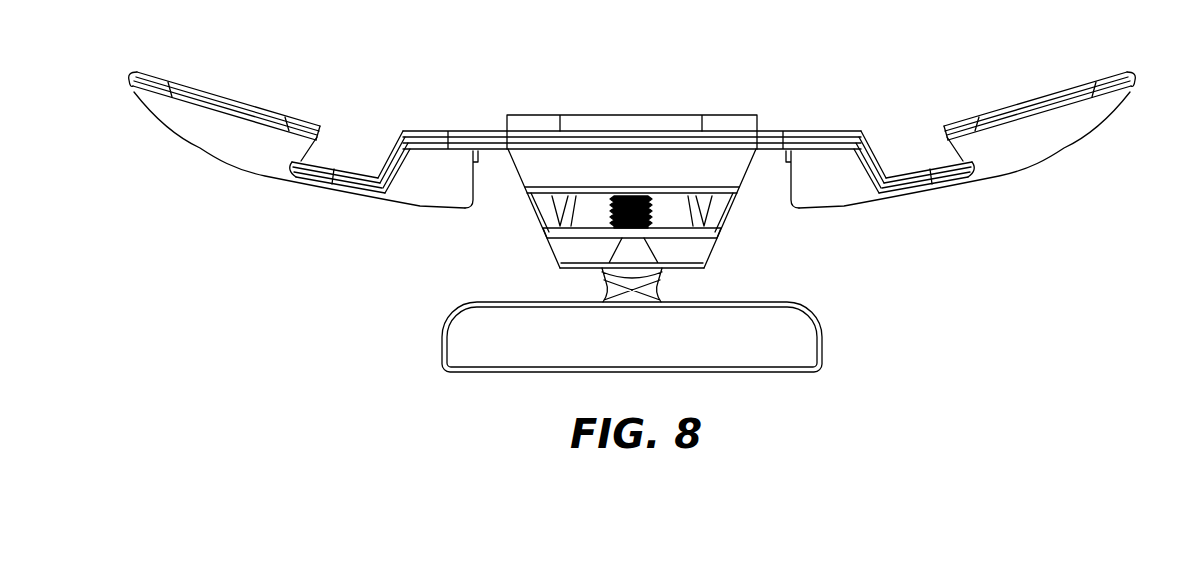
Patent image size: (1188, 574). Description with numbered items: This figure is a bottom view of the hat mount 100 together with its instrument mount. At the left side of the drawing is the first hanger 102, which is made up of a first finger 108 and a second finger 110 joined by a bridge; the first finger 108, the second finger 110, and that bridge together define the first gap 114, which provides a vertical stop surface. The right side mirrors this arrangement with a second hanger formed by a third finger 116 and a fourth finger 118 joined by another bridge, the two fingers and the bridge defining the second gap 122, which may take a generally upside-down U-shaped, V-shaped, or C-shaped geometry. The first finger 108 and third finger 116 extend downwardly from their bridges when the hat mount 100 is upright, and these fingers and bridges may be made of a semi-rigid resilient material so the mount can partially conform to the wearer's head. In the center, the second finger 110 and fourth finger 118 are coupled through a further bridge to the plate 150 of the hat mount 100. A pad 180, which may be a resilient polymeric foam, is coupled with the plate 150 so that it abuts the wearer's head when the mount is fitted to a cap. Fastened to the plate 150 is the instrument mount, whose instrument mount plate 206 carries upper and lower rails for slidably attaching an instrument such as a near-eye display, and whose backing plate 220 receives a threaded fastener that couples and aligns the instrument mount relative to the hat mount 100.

The hat mount 100 is at (341, 67).
The first hanger 102 is at (236, 235).
The first finger 108 is at (230, 147).
The second finger 110 is at (427, 186).
The first gap 114 is at (357, 143).
The third finger 116 is at (1027, 153).
The fourth finger 118 is at (828, 186).
The second gap 122 is at (912, 142).
The plate 150 is at (683, 152).
The pad 180 is at (600, 112).
The instrument mount plate 206 is at (475, 333).
The backing plate 220 is at (697, 253).